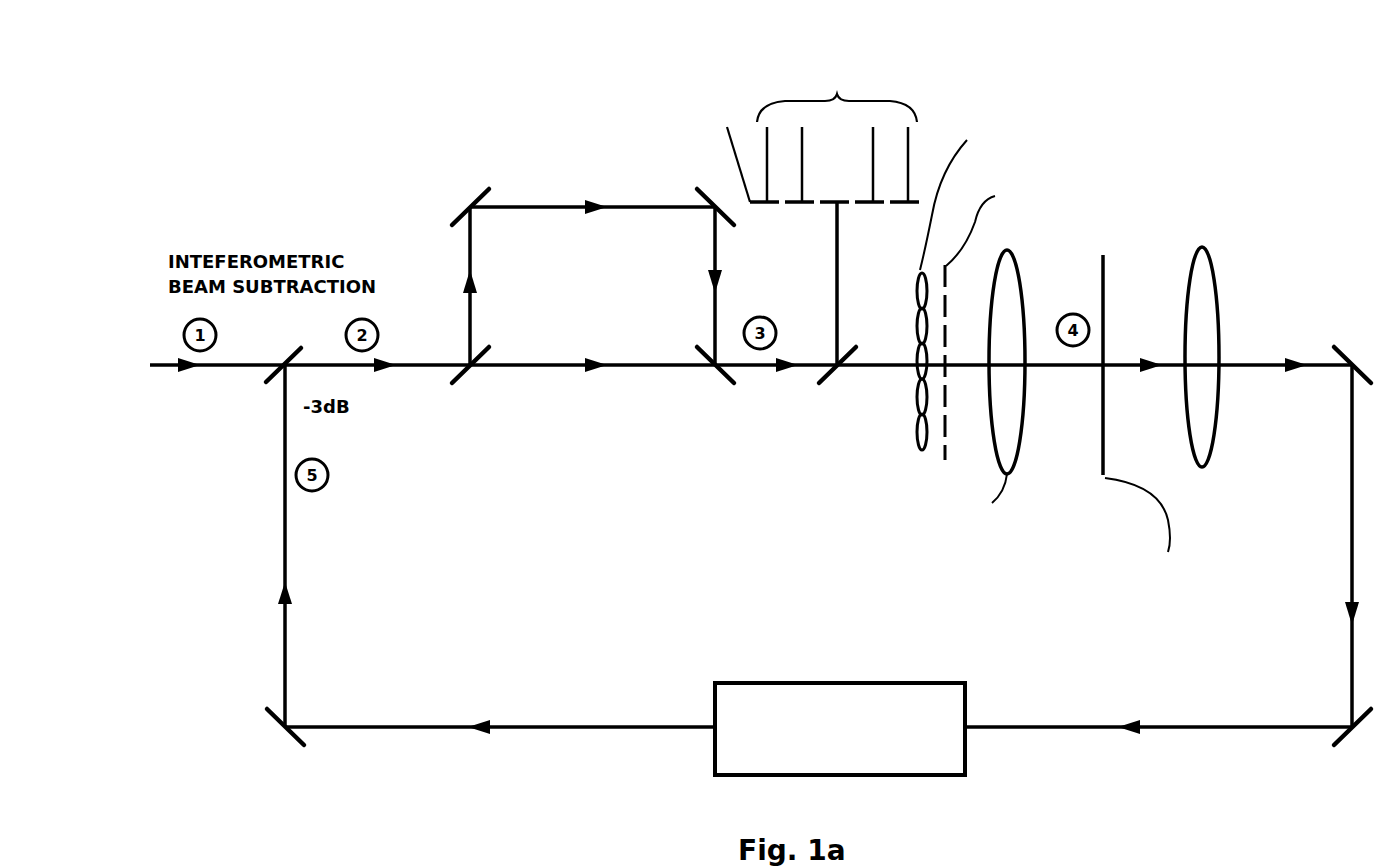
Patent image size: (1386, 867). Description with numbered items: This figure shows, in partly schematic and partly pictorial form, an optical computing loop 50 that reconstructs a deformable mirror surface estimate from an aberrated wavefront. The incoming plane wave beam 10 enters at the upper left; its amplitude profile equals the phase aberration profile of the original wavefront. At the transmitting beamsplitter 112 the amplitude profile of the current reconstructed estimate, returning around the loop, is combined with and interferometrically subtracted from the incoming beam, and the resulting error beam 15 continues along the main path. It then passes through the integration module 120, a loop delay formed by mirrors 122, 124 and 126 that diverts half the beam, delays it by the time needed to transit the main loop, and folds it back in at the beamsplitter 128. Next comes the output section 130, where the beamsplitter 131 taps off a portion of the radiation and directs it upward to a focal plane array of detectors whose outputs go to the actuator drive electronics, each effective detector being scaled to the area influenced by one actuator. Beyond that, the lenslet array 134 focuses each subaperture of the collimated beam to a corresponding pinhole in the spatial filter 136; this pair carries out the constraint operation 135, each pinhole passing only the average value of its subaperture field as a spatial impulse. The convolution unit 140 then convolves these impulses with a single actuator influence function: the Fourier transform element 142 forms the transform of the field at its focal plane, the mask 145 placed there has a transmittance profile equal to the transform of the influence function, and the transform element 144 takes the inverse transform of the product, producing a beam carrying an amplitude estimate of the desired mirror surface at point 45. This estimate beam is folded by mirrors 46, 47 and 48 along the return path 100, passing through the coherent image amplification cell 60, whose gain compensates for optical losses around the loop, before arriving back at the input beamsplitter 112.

The incoming plane wave beam 10 is at (175, 365).
The transmitted beam 15 is at (381, 371).
The beam point after Fourier transform lens 45 is at (1077, 369).
The folding mirror 46 is at (1338, 352).
The folding mirror 47 is at (1340, 738).
The folding mirror 48 is at (303, 742).
The optical system 50 is at (698, 571).
The coherent image amplification cell 60 is at (870, 683).
The return beam path 100 is at (508, 754).
The transmitting beamsplitter 112 is at (268, 306).
The integration module 120 is at (585, 271).
The mirror 122 is at (483, 349).
The mirror 124 is at (486, 190).
The mirror 126 is at (733, 225).
The beamsplitter 128 is at (702, 345).
The output section 130 is at (860, 303).
The beamsplitter 131 is at (852, 350).
The lenslet array 134 is at (918, 283).
The constraint operation box 135 is at (928, 455).
The spatial filter 136 is at (878, 205).
The convolution unit 140 is at (1206, 435).
The Fourier transform element 142 is at (1022, 436).
The inverse transform element 144 is at (1220, 438).
The mask 145 is at (1108, 416).